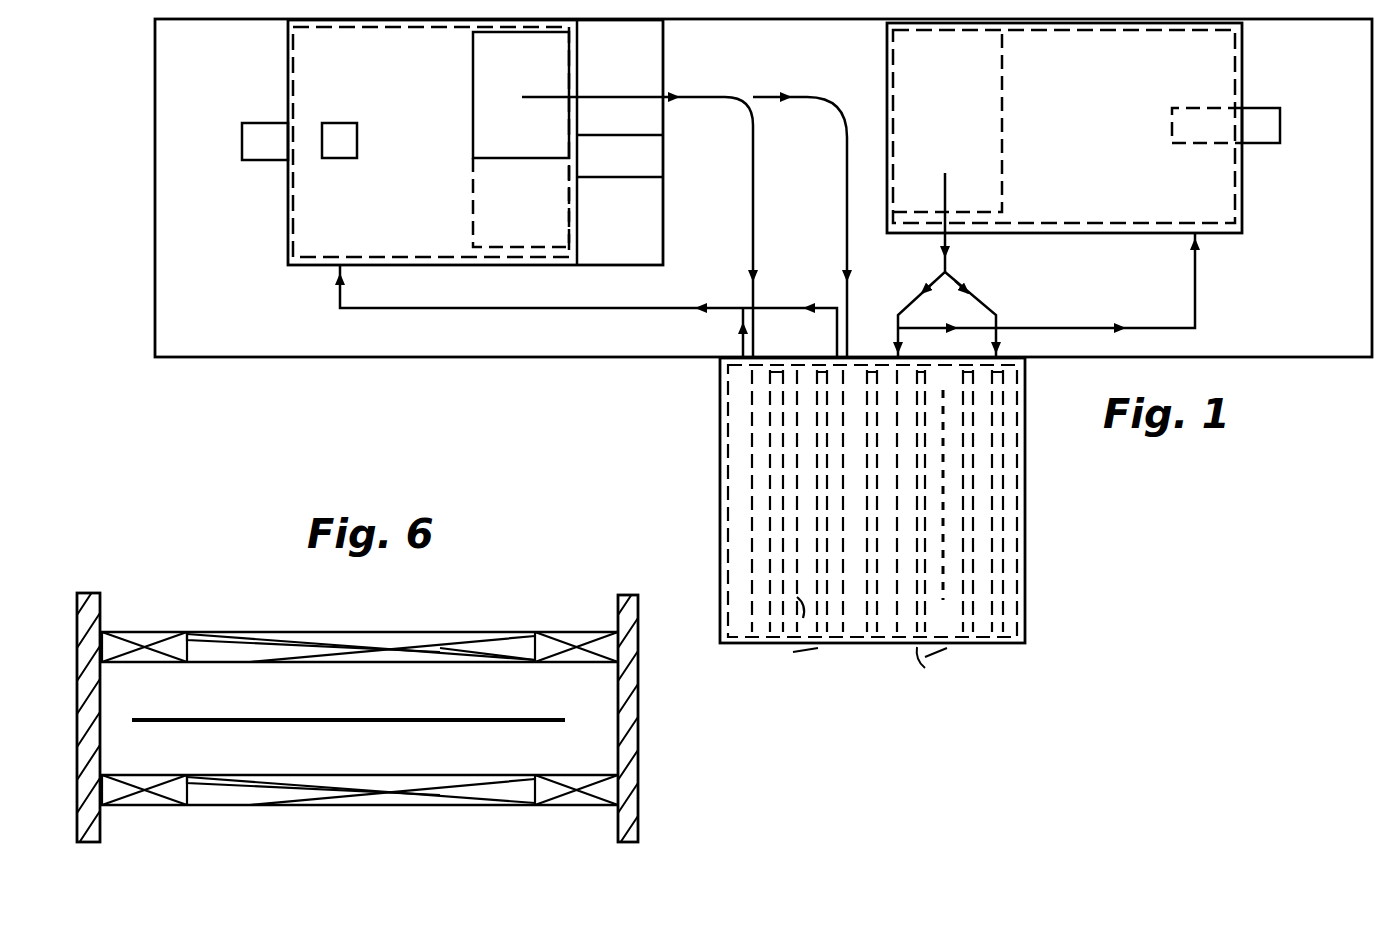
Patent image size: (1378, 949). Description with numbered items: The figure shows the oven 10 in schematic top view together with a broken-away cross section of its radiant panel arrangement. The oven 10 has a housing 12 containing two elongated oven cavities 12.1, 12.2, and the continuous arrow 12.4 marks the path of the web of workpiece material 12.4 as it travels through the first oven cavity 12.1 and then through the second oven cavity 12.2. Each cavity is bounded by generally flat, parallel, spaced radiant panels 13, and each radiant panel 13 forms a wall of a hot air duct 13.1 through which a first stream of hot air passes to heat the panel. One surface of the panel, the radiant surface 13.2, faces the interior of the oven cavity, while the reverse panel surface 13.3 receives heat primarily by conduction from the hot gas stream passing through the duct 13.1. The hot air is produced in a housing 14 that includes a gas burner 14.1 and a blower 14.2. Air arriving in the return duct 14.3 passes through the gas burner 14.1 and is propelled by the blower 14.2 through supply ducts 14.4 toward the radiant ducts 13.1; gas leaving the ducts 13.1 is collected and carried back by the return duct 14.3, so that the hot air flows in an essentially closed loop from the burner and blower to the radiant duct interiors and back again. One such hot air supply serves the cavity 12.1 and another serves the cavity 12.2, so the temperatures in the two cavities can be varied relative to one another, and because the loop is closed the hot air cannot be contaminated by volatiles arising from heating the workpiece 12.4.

In FIG. 1, the oven 10 is at (630, 372).
In FIG. 1, the housing 12 is at (1028, 512).
In FIG. 6, the housing 12 is at (645, 771).
In FIG. 1, the oven cavity 12.1 is at (787, 376).
In FIG. 6, the oven cavity 12.1 is at (458, 773).
In FIG. 1, the oven cavity 12.2 is at (945, 378).
In FIG. 1, the web of workpiece material 12.4 is at (803, 620).
In FIG. 6, the web of workpiece material 12.4 is at (418, 722).
In FIG. 6, the radiant panel 13 is at (258, 664).
In FIG. 1, the hot air duct 13.1 is at (760, 475).
In FIG. 6, the hot air duct 13.1 is at (223, 648).
In FIG. 6, the radiant surface 13.2 is at (300, 671).
In FIG. 6, the reverse panel surface 13.3 is at (450, 662).
In FIG. 1, the housing 14 is at (288, 266).
In FIG. 1, the gas burner 14.1 is at (265, 157).
In FIG. 1, the blower 14.2 is at (540, 204).
In FIG. 1, the return duct 14.3 is at (492, 316).
In FIG. 1, the supply duct 14.4 is at (847, 180).